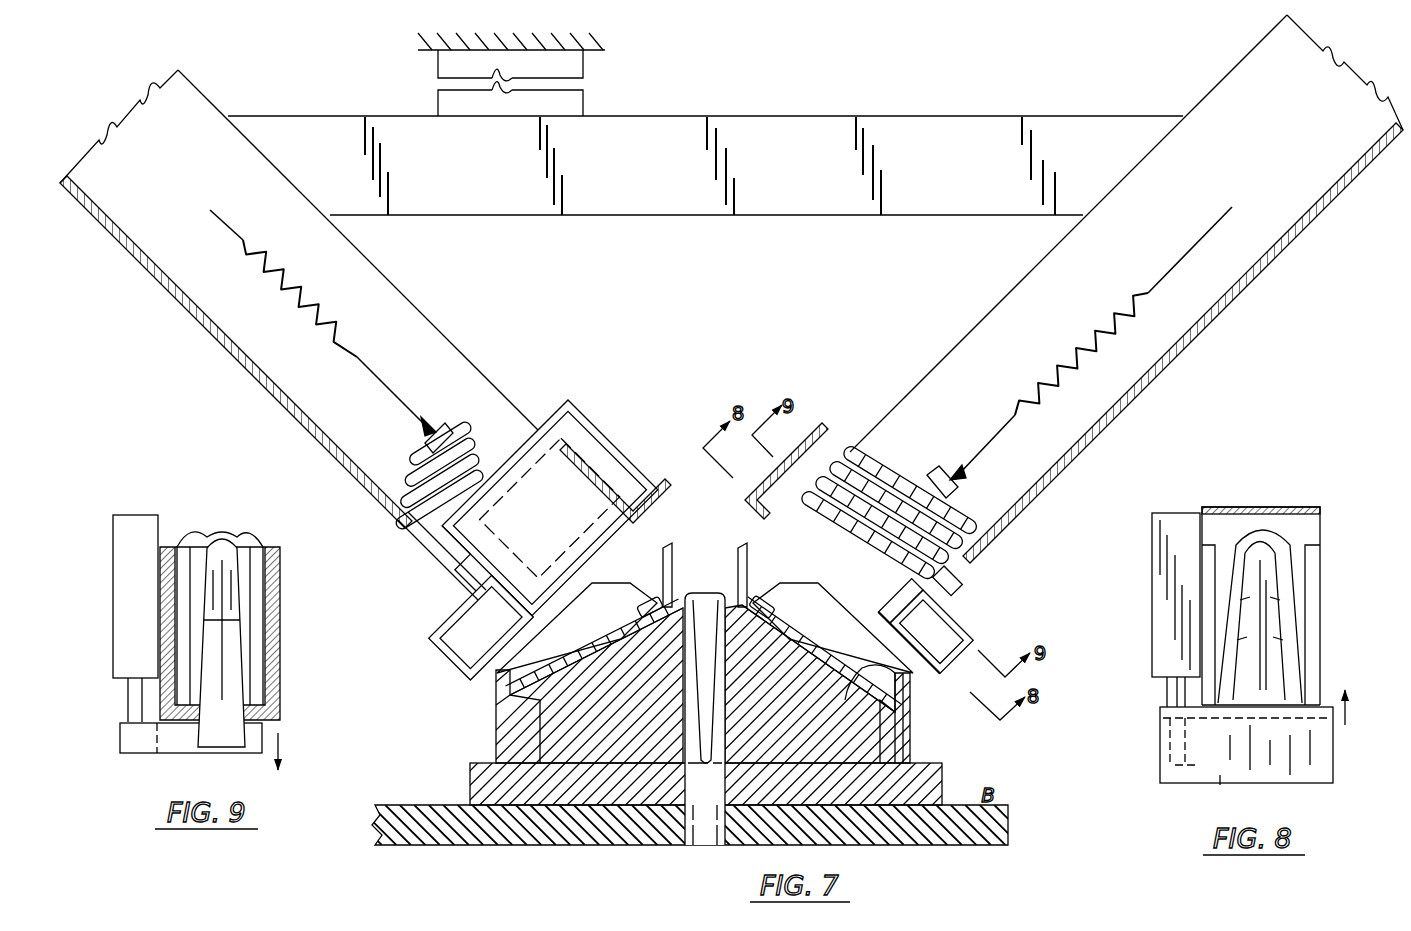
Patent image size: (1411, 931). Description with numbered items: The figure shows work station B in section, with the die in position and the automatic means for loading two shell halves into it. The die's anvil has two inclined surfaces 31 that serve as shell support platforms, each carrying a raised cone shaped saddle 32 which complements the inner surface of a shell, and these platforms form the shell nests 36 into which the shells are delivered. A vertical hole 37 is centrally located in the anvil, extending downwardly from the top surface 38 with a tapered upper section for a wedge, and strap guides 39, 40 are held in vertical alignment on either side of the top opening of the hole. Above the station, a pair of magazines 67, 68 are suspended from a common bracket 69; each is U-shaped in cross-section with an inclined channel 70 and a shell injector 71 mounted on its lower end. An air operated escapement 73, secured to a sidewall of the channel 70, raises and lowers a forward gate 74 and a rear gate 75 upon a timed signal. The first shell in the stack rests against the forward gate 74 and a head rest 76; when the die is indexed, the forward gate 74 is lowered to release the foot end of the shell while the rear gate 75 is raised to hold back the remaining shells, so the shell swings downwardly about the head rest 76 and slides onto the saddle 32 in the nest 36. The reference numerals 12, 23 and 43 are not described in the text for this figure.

In FIG. 7, the die body 12 is at (490, 728).
In FIG. 7, the sleeve 23 is at (912, 668).
In FIG. 9, the sleeve 23 is at (245, 540).
In FIG. 8, the sleeve 23 is at (1278, 530).
In FIG. 7, the inclined surfaces 31 is at (824, 706).
In FIG. 7, the cone shaped saddle 32 is at (912, 745).
In FIG. 7, the shell nests 36 is at (604, 620).
In FIG. 7, the vertical hole 37 is at (705, 832).
In FIG. 7, the top surface 38 is at (676, 602).
In FIG. 7, the strap guide 39 is at (673, 546).
In FIG. 7, the strap guide 40 is at (749, 588).
In FIG. 7, the arrow direction 43 is at (714, 588).
In FIG. 7, the magazine 67 is at (477, 338).
In FIG. 7, the magazine 68 is at (955, 338).
In FIG. 7, the common bracket 69 is at (920, 108).
In FIG. 7, the inclined channel 70 is at (385, 302).
In FIG. 9, the inclined channel 70 is at (282, 590).
In FIG. 8, the inclined channel 70 is at (1312, 592).
In FIG. 7, the shell injector 71 is at (583, 440).
In FIG. 9, the air operated escapement 73 is at (120, 622).
In FIG. 8, the air operated escapement 73 is at (1148, 625).
In FIG. 7, the forward gate 74 is at (968, 650).
In FIG. 8, the forward gate 74 is at (1245, 752).
In FIG. 7, the rear gate 75 is at (958, 610).
In FIG. 9, the rear gate 75 is at (232, 678).
In FIG. 7, the head rest 76 is at (672, 503).